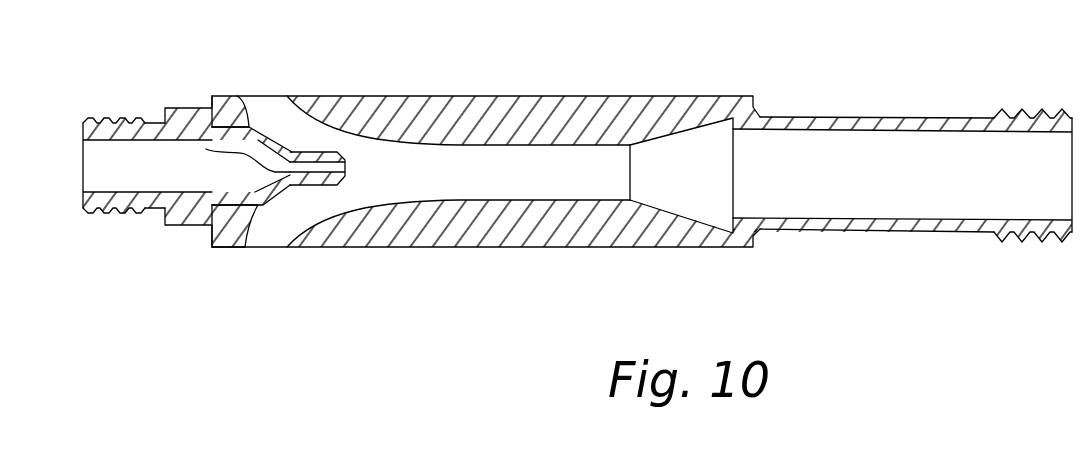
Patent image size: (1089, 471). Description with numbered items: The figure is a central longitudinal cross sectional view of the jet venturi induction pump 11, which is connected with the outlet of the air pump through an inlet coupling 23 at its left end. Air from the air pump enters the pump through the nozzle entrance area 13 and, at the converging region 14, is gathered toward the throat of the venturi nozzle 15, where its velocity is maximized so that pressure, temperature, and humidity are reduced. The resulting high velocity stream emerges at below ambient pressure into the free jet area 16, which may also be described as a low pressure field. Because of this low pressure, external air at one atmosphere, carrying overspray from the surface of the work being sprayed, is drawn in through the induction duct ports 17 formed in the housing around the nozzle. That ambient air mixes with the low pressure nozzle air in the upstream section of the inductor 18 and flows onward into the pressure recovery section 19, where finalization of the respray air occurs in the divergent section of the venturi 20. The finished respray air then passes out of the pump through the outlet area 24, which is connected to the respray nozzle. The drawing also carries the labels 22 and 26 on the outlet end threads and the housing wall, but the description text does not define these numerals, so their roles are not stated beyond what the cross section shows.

The jet venturi induction pump 11 is at (483, 262).
The nozzle entrance area 13 is at (110, 180).
The converging region 14 is at (210, 178).
The venturi nozzle 15 is at (206, 149).
The free jet area 16 is at (345, 170).
The induction duct ports 17 is at (268, 102).
The upstream section of the inductor 18 is at (320, 200).
The pressure recovery section 19 is at (610, 160).
The divergent section of the venturi 20 is at (682, 200).
The outlet threads 22 is at (1032, 115).
The inlet coupling 23 is at (115, 120).
The outlet area 24 is at (806, 150).
The body wall 26 is at (453, 110).